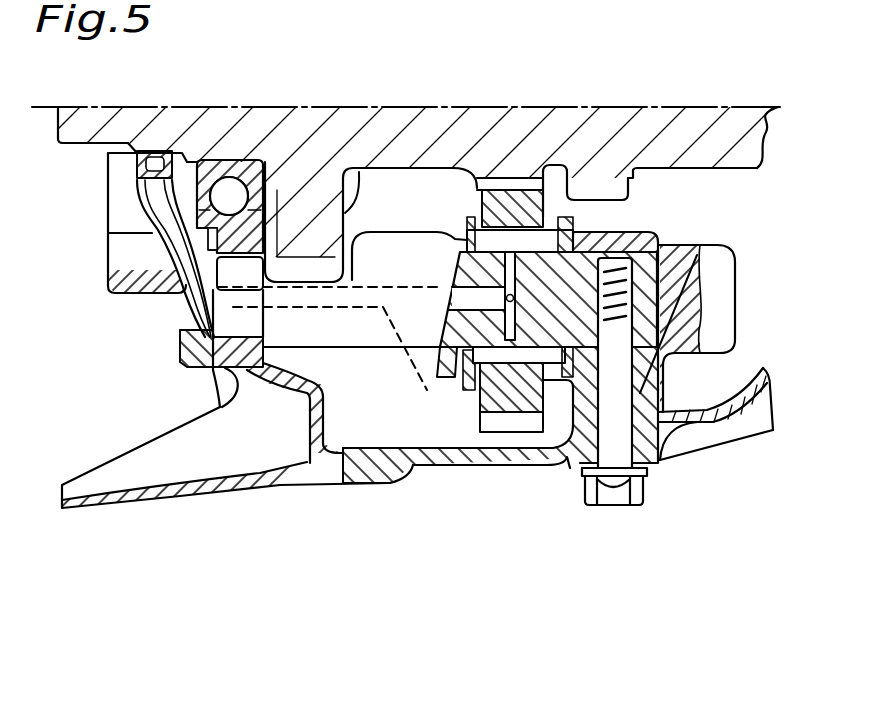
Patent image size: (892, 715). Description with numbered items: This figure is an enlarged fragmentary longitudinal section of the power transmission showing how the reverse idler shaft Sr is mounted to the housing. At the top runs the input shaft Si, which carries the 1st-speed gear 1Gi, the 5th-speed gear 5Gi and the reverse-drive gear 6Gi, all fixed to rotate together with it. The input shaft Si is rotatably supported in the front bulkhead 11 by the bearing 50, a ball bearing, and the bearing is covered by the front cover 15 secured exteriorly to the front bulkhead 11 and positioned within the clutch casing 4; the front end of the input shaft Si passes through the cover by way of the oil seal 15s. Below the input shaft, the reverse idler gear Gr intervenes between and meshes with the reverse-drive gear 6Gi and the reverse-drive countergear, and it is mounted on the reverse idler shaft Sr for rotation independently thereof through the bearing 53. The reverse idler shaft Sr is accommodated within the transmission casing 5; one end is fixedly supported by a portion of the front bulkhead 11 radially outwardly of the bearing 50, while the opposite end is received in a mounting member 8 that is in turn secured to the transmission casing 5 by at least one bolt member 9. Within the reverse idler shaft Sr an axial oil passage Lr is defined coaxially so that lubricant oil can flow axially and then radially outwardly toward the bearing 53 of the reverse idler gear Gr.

The input shaft Si is at (733, 170).
The 5th-speed gear 5Gi is at (357, 170).
The reverse-drive gear 6Gi is at (457, 170).
The 1st-speed gear 1Gi is at (633, 170).
The oil seal 15s is at (140, 163).
The bearing 50 is at (195, 228).
The front cover 15 is at (153, 297).
The front bulkhead 11 is at (213, 378).
The clutch casing 4 is at (172, 494).
The reverse idler shaft Sr is at (357, 349).
The axial oil passage Lr is at (340, 359).
The reverse idler gear Gr is at (503, 433).
The bearing 53 is at (503, 357).
The transmission casing 5 is at (547, 467).
The bolt member 9 is at (617, 506).
The mounting member 8 is at (658, 378).